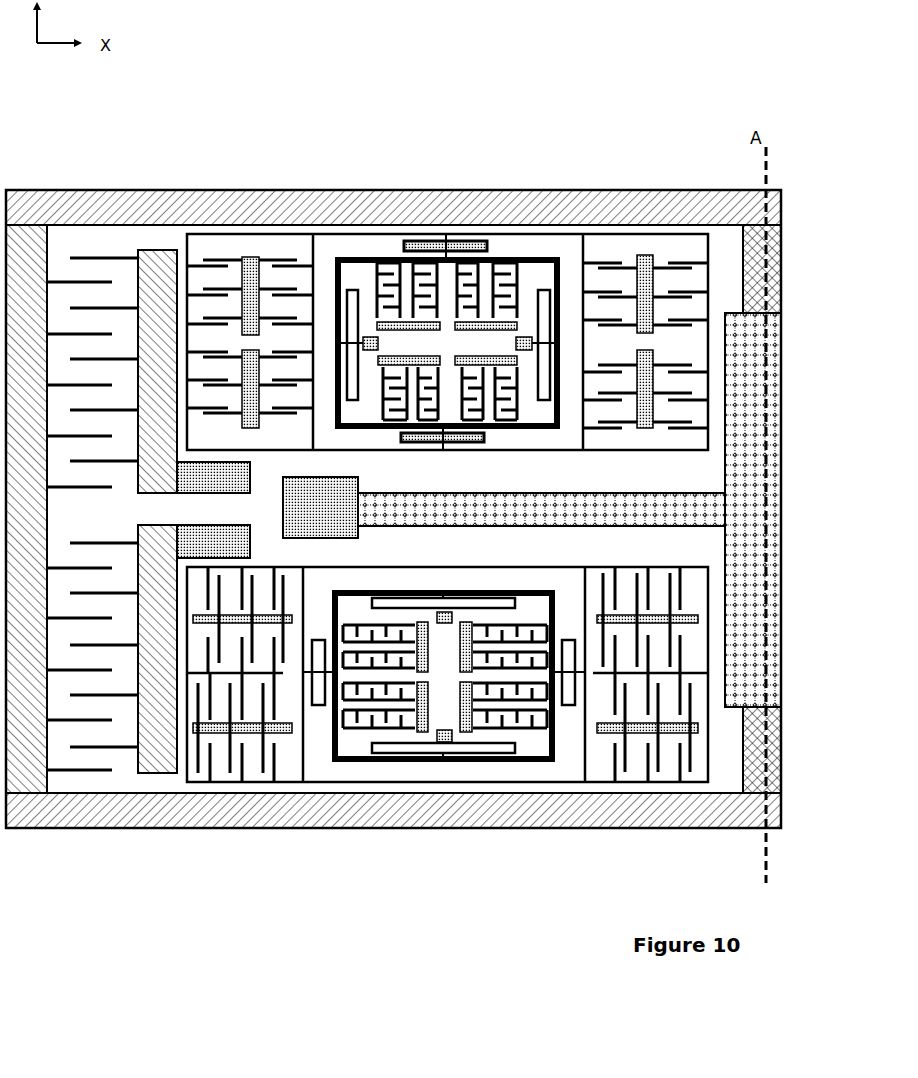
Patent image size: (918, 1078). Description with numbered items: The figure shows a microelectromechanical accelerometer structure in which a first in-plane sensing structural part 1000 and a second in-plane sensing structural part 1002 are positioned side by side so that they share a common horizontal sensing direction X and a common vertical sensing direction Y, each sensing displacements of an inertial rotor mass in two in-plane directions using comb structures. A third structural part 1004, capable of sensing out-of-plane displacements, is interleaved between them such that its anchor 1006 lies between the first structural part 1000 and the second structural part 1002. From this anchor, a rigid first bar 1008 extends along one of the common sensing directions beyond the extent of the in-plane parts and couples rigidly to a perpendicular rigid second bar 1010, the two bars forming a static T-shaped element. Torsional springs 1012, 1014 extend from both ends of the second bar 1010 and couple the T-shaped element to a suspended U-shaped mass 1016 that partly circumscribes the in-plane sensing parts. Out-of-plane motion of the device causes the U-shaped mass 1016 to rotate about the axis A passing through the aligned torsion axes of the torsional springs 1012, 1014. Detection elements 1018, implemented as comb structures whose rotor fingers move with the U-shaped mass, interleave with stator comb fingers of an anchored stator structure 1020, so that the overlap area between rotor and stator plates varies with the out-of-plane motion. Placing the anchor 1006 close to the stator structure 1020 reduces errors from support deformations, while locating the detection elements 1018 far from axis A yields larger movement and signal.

The first in-plane sensing structural part 1000 is at (528, 228).
The second in-plane sensing structural part 1002 is at (480, 785).
The third structural part 1004 is at (90, 795).
The anchor 1006 is at (281, 516).
The rigid first bar 1008 is at (522, 505).
The rigid second bar 1010 is at (783, 515).
The torsional spring 1012 is at (783, 742).
The torsional spring 1014 is at (783, 265).
The U-shaped mass 1016 is at (217, 192).
The detection element 1018 is at (82, 272).
The anchored stator structure 1020 is at (143, 250).